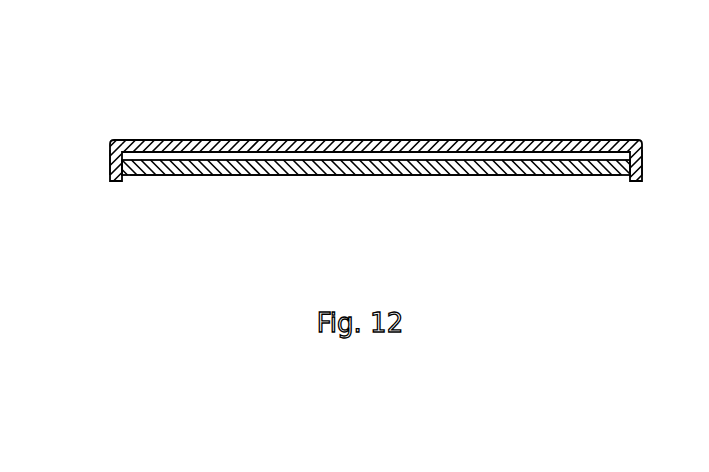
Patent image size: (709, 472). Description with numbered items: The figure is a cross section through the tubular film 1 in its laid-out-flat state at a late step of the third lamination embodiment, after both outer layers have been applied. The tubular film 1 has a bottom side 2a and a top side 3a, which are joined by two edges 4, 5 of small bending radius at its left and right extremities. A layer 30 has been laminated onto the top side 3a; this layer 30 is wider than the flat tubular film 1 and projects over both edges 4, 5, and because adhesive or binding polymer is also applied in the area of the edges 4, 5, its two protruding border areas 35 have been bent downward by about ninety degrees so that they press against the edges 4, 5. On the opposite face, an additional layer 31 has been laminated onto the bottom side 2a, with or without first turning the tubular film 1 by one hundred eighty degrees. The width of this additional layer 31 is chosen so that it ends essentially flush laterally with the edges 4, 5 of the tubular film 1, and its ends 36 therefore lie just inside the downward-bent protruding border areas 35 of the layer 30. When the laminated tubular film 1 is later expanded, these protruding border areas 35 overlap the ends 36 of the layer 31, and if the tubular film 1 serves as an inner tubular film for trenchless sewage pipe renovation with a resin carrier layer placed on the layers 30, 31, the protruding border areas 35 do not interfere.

The tubular film 1 is at (376, 184).
The layer 30 is at (376, 184).
The additional layer 31 is at (376, 218).
The protruding border areas 35 is at (117, 178).
The ends of layer 36 is at (132, 172).
The top side 3a is at (280, 123).
The bottom side 2a is at (278, 187).
The edge 4 is at (112, 158).
The edge 5 is at (640, 157).